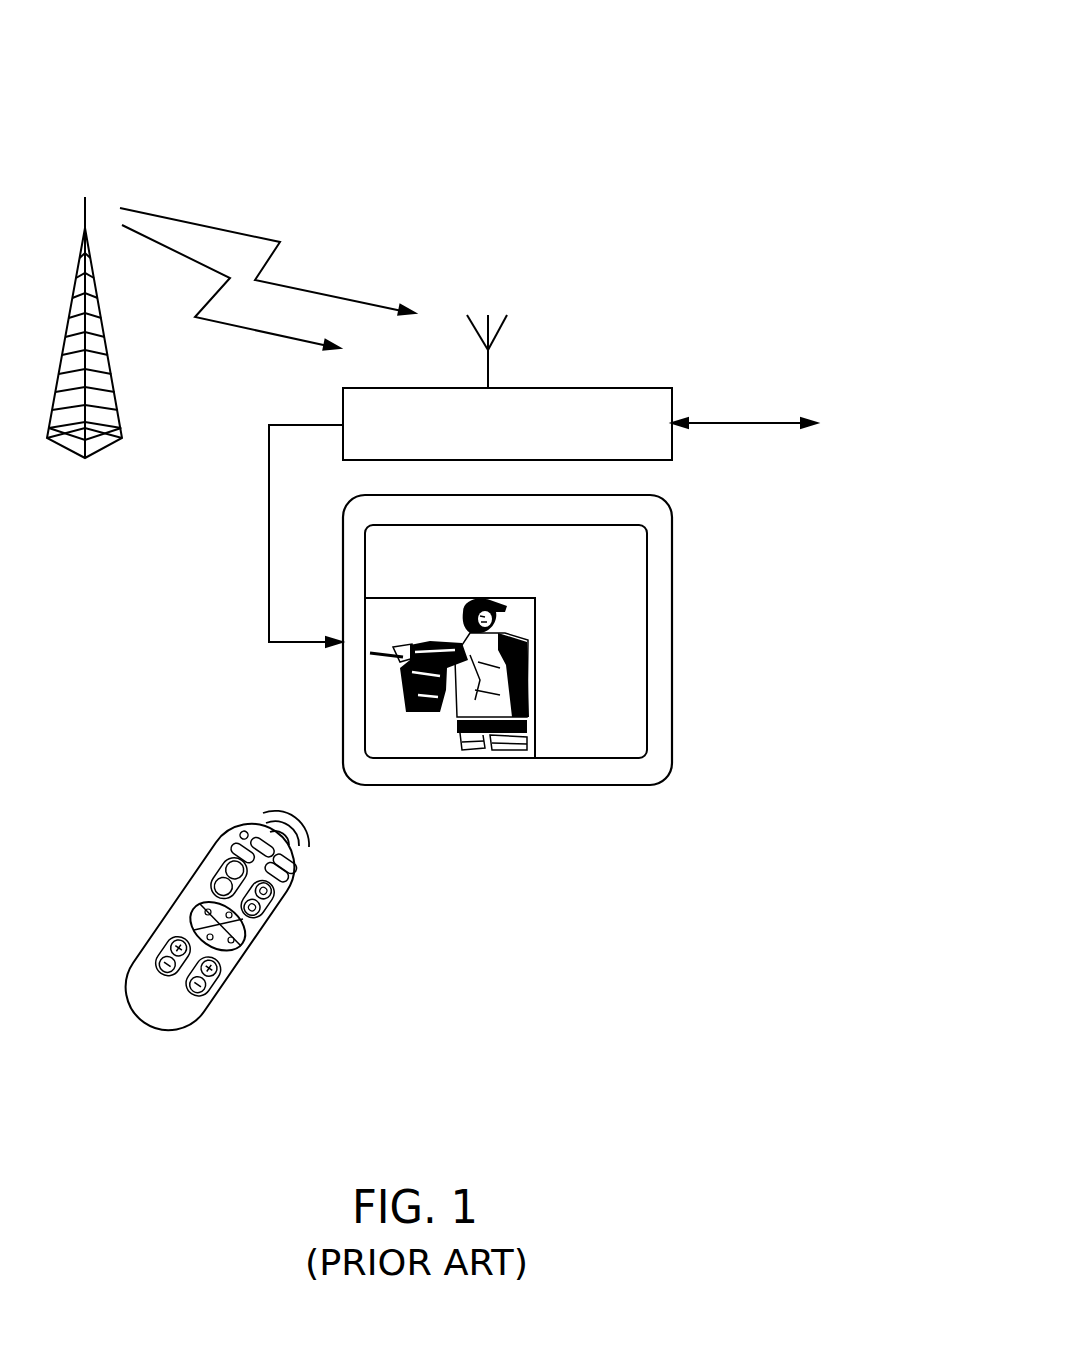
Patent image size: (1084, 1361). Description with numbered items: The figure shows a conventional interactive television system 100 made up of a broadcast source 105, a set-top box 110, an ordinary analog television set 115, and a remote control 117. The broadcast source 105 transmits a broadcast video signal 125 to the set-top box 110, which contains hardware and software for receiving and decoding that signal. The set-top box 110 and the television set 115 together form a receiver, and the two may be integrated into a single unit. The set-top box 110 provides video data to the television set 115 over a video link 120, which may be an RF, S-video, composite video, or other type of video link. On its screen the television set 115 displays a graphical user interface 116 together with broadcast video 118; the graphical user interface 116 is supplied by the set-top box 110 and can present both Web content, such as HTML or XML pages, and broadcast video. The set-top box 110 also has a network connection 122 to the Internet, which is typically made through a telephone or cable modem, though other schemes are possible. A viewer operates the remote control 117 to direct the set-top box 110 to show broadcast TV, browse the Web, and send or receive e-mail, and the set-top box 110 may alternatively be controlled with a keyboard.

The interactive television system 100 is at (676, 56).
The broadcast source 105 is at (86, 204).
The broadcast video signal 125 is at (203, 223).
The set-top box 110 is at (663, 451).
The network connection 122 is at (712, 423).
The video link 120 is at (268, 508).
The television set 115 is at (672, 655).
The graphical user interface 116 is at (603, 580).
The broadcast video 118 is at (430, 740).
The remote control 117 is at (188, 1015).